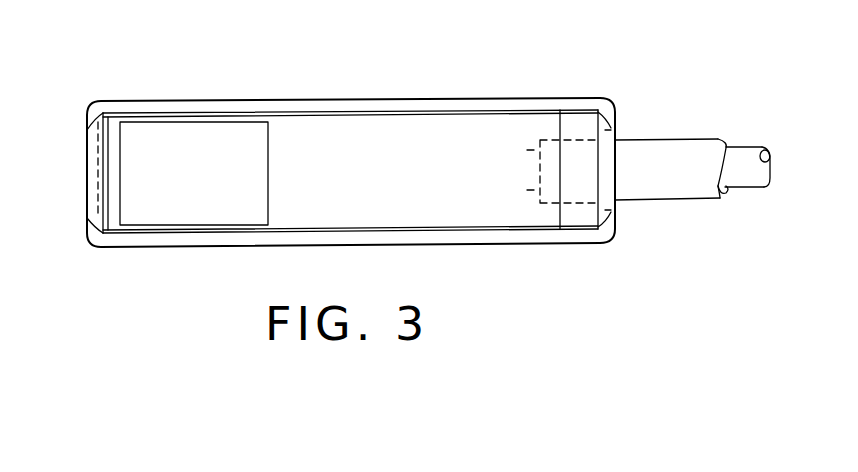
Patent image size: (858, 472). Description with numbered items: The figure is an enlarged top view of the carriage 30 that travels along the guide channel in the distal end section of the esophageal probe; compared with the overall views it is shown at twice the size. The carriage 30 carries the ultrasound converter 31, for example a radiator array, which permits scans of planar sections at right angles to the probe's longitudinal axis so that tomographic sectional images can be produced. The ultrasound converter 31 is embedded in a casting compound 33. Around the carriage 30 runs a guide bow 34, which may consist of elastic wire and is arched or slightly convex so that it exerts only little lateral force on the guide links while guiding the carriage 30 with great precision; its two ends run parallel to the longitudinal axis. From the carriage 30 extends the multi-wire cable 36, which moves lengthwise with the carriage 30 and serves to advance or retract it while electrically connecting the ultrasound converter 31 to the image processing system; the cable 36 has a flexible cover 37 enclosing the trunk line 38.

The carriage 30 is at (290, 88).
The ultrasound converter 31 is at (238, 158).
The casting compound 33 is at (462, 132).
The guide bow 34 is at (408, 98).
The multi-wire cable 36 is at (720, 133).
The flexible cover 37 is at (730, 193).
The trunk line 38 is at (772, 153).